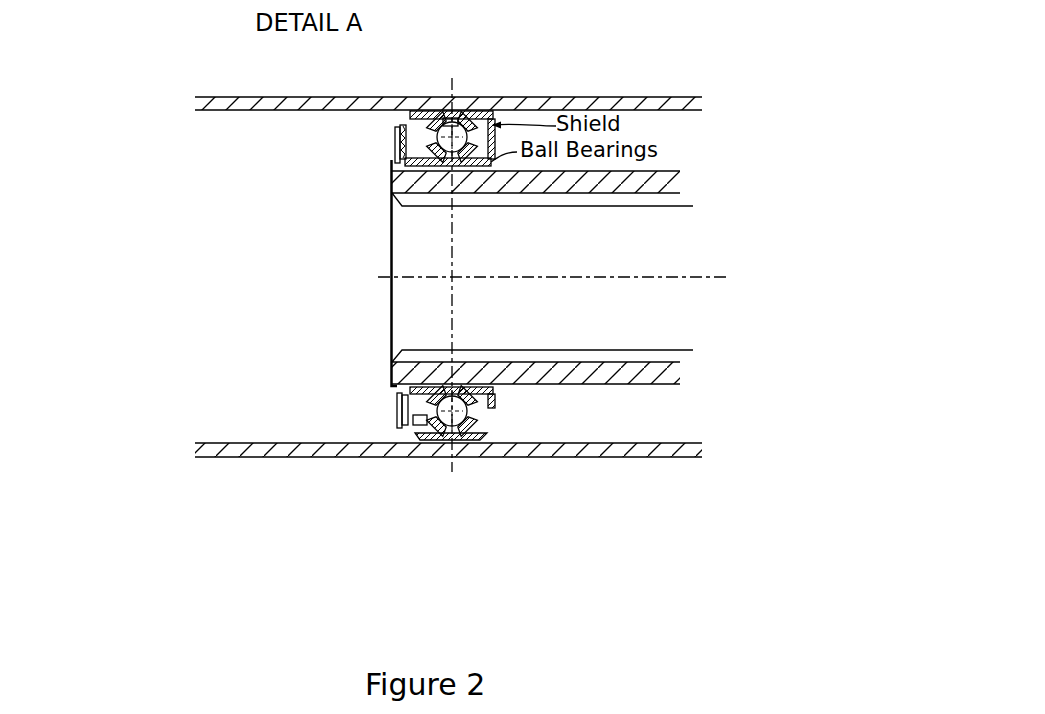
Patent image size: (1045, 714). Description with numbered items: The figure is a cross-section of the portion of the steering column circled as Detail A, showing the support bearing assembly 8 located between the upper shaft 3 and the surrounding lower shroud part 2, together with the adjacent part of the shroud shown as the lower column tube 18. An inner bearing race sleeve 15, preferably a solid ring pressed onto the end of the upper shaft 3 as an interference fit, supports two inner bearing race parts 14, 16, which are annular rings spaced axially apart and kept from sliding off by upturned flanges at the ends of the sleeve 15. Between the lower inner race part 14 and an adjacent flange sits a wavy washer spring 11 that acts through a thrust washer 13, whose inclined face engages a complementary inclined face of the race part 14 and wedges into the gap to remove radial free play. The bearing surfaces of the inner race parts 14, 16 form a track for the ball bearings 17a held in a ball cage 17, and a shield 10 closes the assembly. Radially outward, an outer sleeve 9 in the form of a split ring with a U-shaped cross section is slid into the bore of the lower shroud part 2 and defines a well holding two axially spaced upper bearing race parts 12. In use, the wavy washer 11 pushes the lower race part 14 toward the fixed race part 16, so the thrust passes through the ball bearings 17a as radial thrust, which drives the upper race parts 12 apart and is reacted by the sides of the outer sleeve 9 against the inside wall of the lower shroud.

The lower shroud part 2 is at (448, 505).
The upper shaft 3 is at (498, 195).
The support bearing assembly 8 is at (289, 175).
The outer sleeve 9 is at (412, 117).
The shield 10 is at (395, 139).
The wavy washer spring 11 is at (403, 135).
The upper bearing race parts 12 is at (418, 124).
The thrust washer 13 is at (398, 166).
The inner bearing race part 14 is at (440, 156).
The inner bearing race sleeve 15 is at (391, 262).
The inner bearing race part 16 is at (267, 241).
The ball cage 17 is at (435, 406).
The ball bearings 17a is at (487, 417).
The lower column tube 18 is at (326, 460).